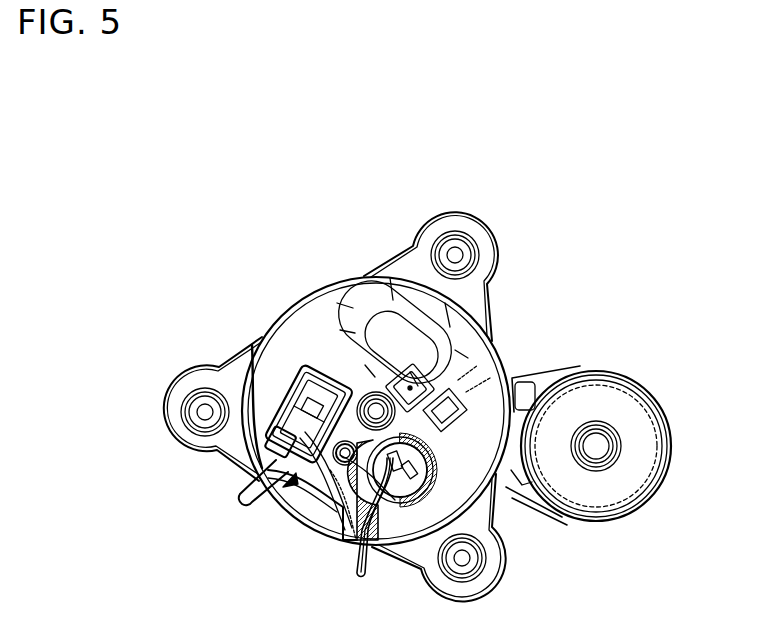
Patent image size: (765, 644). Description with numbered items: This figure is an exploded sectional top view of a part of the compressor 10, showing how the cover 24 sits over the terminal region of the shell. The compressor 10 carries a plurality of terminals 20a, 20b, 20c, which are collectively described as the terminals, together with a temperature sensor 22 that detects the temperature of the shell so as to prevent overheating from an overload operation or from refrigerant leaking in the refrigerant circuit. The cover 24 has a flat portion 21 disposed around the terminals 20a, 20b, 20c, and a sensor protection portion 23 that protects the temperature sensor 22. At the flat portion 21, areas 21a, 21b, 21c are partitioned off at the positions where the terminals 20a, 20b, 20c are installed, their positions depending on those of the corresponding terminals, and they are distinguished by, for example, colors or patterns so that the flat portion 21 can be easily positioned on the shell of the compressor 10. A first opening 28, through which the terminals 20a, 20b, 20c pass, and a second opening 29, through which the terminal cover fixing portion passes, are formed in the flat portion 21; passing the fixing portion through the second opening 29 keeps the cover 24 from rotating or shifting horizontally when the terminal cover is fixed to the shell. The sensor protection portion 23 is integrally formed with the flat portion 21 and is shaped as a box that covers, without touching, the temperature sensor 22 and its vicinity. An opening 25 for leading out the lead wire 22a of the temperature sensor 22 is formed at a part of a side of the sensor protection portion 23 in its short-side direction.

The compressor 10 is at (348, 276).
The terminal 20a is at (383, 520).
The terminal 20b is at (420, 418).
The terminal 20c is at (371, 392).
The flat portion 21 is at (445, 485).
The area 21a is at (405, 543).
The area 21b is at (495, 400).
The area 21c is at (350, 545).
The temperature sensor 22 is at (265, 405).
The lead wire 22a is at (262, 490).
The sensor protection portion 23 is at (300, 380).
The cover 24 is at (330, 462).
The opening 25 is at (283, 487).
The first opening 28 is at (350, 505).
The second opening 29 is at (335, 468).